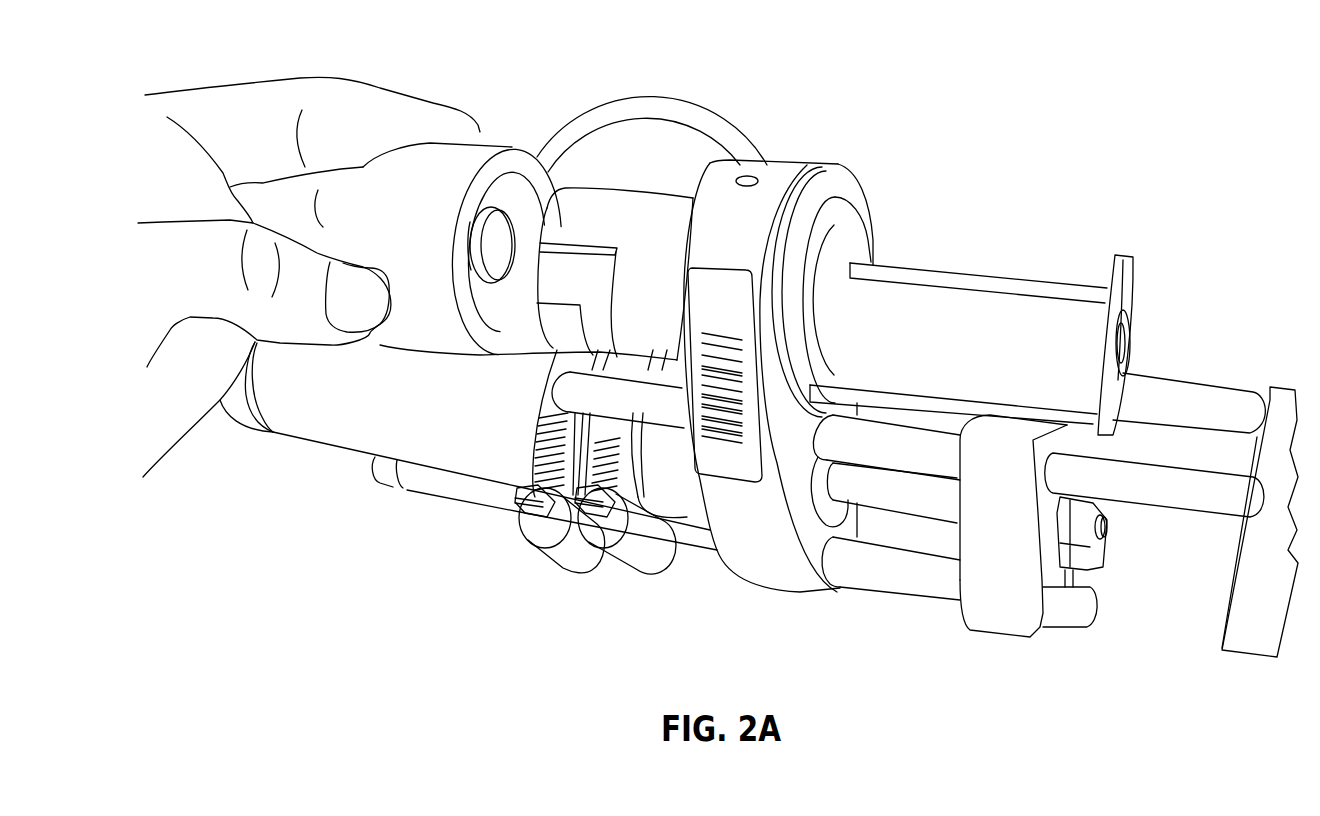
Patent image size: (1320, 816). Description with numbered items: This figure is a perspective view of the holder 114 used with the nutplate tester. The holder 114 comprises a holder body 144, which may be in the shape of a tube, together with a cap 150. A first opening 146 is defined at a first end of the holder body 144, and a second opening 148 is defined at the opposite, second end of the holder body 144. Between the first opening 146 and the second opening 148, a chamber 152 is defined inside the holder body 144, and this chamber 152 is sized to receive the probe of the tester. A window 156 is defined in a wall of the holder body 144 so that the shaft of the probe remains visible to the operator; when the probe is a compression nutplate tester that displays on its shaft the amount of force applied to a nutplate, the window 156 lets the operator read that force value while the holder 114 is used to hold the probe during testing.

The cap 150 is at (420, 180).
The second opening 148 is at (539, 245).
The holder 114 is at (600, 150).
The holder body 144 is at (640, 203).
The chamber 152 is at (825, 283).
The window 156 is at (993, 280).
The first opening 146 is at (1126, 345).